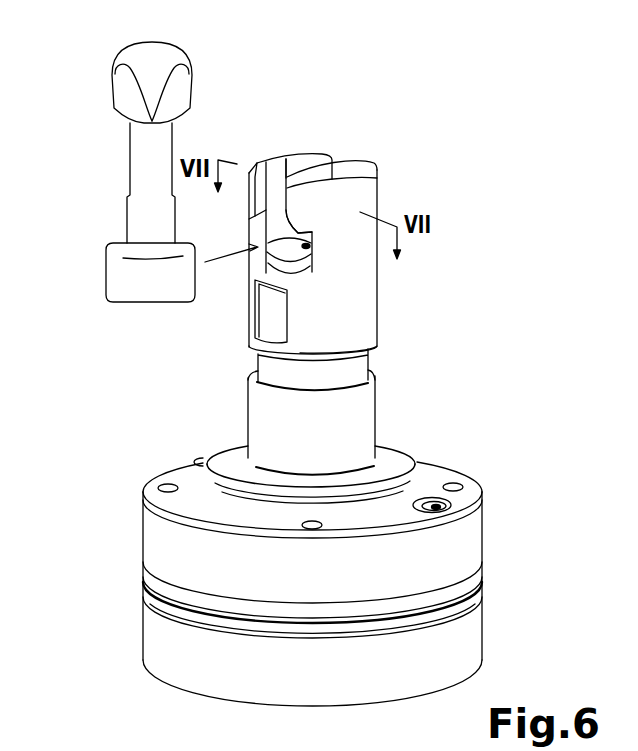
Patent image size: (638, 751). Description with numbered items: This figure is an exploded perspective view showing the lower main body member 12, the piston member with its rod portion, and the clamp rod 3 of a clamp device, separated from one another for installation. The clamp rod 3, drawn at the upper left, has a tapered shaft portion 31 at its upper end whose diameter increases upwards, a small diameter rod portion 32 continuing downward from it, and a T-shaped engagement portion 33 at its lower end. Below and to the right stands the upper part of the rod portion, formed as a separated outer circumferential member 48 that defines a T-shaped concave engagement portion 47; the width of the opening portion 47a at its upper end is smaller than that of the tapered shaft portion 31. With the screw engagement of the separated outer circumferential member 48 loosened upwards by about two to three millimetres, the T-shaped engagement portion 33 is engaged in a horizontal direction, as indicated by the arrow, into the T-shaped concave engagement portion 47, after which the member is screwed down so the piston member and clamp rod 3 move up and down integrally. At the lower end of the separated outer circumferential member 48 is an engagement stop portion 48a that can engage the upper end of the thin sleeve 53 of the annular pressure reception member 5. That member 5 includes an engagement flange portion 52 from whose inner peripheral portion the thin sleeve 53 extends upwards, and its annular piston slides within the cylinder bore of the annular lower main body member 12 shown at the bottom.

The clamp rod 3 is at (142, 157).
The tapered shaft portion 31 is at (123, 85).
The small diameter rod portion 32 is at (140, 143).
The T-shaped engagement portion 33 is at (128, 270).
The T-shaped concave engagement portion 47 is at (302, 231).
The opening portion 47a is at (300, 163).
The separated outer circumferential member 48 is at (363, 231).
The engagement stop portion 48a is at (378, 349).
The annular pressure reception member 5 is at (317, 426).
The thin sleeve 53 is at (248, 399).
The engagement flange portion 52 is at (223, 460).
The lower main body member 12 is at (478, 478).